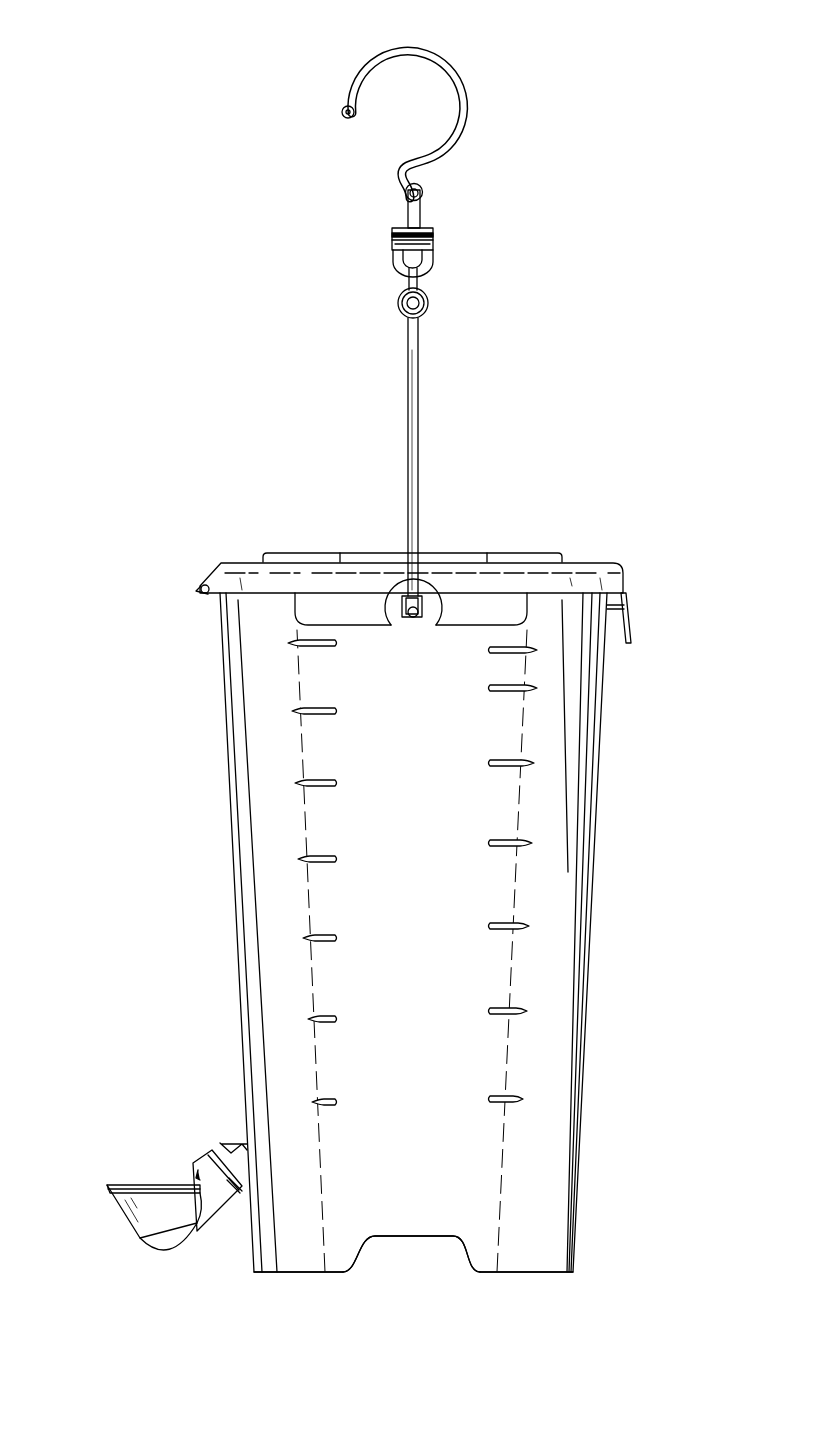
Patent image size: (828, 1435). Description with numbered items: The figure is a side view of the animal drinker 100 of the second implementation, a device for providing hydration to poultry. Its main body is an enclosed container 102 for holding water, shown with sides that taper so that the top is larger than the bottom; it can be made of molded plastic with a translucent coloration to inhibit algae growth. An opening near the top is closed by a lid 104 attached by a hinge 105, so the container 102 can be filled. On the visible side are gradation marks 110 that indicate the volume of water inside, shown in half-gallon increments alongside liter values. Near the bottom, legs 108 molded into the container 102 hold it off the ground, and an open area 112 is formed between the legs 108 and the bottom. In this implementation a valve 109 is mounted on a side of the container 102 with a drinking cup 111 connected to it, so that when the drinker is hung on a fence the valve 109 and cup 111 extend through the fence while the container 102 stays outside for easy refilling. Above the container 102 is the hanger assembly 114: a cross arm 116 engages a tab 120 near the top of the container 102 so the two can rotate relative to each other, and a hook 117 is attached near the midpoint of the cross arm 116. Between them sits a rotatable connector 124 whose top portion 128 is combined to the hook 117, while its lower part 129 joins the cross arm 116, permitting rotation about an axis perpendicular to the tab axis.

The animal drinker 100 is at (619, 262).
The container 102 is at (582, 760).
The lid 104 is at (603, 580).
The hinge 105 is at (203, 595).
The legs 108 is at (273, 1262).
The valve 109 is at (203, 1165).
The gradation marks 110 is at (512, 926).
The drinking cup 111 is at (123, 1217).
The open area 112 is at (409, 1249).
The hanger assembly 114 is at (496, 166).
The cross arm 116 is at (413, 410).
The hook 117 is at (433, 70).
The tab 120 is at (430, 602).
The rotatable connector 124 is at (512, 192).
The top portion 128 is at (418, 216).
The swivel clevis 129 is at (428, 258).